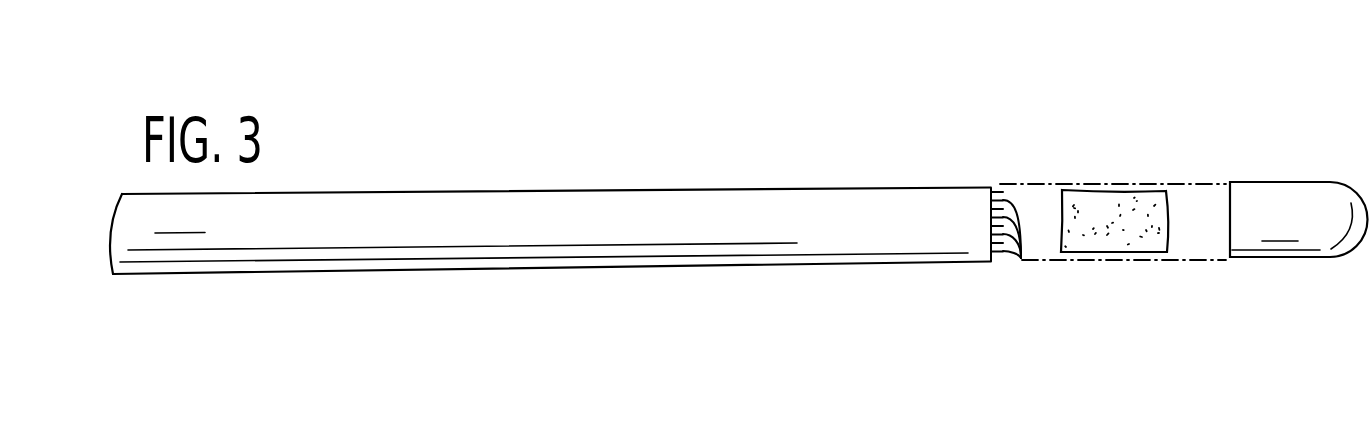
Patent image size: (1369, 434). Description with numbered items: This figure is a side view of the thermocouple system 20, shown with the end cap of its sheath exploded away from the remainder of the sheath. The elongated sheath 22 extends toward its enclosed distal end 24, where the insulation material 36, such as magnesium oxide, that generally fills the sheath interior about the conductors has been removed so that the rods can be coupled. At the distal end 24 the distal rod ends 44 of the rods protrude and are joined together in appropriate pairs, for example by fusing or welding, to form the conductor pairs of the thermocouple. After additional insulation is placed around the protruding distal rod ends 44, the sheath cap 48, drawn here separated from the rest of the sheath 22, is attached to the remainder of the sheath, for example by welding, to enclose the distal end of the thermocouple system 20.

The thermocouple system 20 is at (739, 192).
The sheath 22 is at (814, 202).
The distal end 24 is at (1293, 192).
The insulation material 36 is at (1113, 233).
The distal rod end 44 is at (1021, 258).
The sheath cap 48 is at (1285, 236).